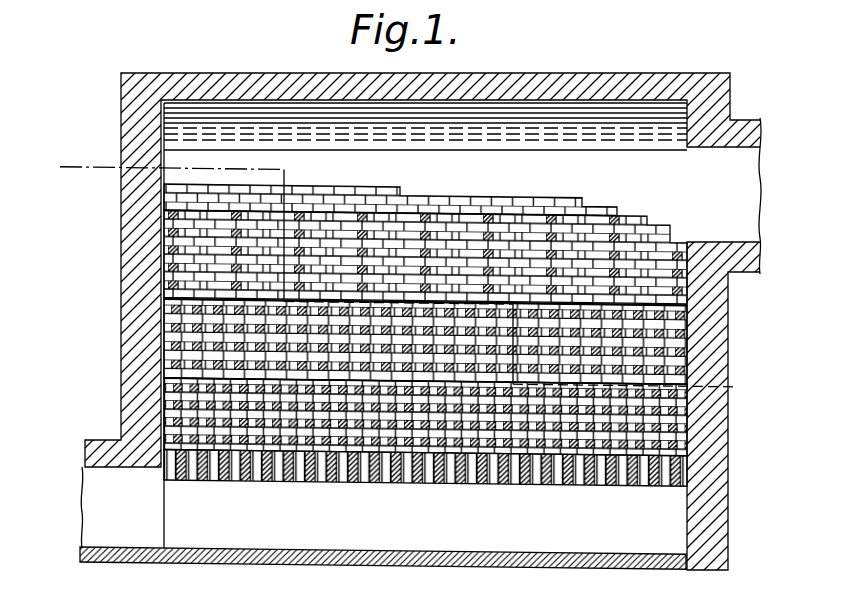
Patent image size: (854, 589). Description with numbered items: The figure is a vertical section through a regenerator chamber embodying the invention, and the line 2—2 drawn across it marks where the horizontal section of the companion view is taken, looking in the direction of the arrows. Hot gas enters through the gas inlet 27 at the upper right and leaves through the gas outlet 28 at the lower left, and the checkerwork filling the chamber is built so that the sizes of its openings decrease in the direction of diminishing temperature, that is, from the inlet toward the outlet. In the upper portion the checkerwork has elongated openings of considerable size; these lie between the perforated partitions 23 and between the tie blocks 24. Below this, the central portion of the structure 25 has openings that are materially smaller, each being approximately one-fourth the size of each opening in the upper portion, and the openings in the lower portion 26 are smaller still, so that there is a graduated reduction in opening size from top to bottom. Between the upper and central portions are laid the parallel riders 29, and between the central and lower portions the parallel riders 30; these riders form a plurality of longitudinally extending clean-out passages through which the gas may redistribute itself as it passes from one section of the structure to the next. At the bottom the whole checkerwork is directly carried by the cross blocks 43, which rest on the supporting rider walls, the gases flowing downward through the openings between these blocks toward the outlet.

The section line 2— 2 is at (78, 152).
The perforated partitions 23 is at (318, 215).
The tie blocks 24 is at (483, 213).
The central portion of the structure 25 is at (166, 341).
The lower portion 26 is at (190, 414).
The gas inlet 27 is at (724, 344).
The gas outlet 28 is at (108, 514).
The parallel riders 29 is at (176, 300).
The parallel riders 30 is at (168, 383).
The cross blocks 43 is at (350, 484).